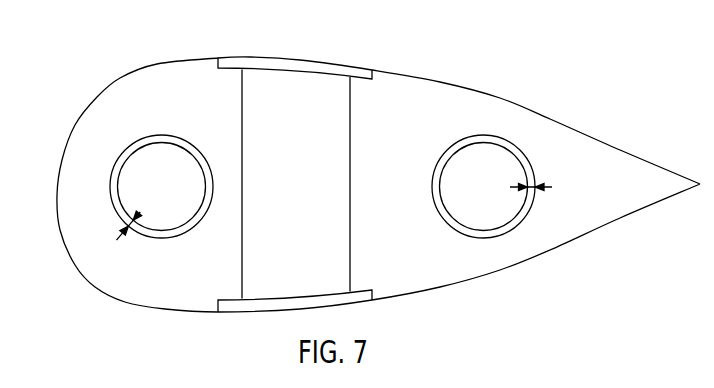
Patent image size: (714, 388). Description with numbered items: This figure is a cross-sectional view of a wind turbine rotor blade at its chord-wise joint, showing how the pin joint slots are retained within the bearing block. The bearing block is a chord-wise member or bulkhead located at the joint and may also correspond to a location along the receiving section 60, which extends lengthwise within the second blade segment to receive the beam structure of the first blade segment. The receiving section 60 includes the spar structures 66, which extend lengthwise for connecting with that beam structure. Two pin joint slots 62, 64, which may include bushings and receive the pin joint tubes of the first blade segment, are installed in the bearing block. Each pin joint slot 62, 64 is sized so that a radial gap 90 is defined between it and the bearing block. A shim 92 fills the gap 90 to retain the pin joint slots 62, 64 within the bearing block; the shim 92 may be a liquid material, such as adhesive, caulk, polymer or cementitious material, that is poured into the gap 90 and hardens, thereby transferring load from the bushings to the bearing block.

The receiving section 60 is at (284, 200).
The pin joint slot 62 is at (148, 200).
The pin joint slot 64 is at (471, 200).
The spar structure 66 is at (350, 118).
The gap 90 is at (534, 180).
The shim 92 is at (163, 233).